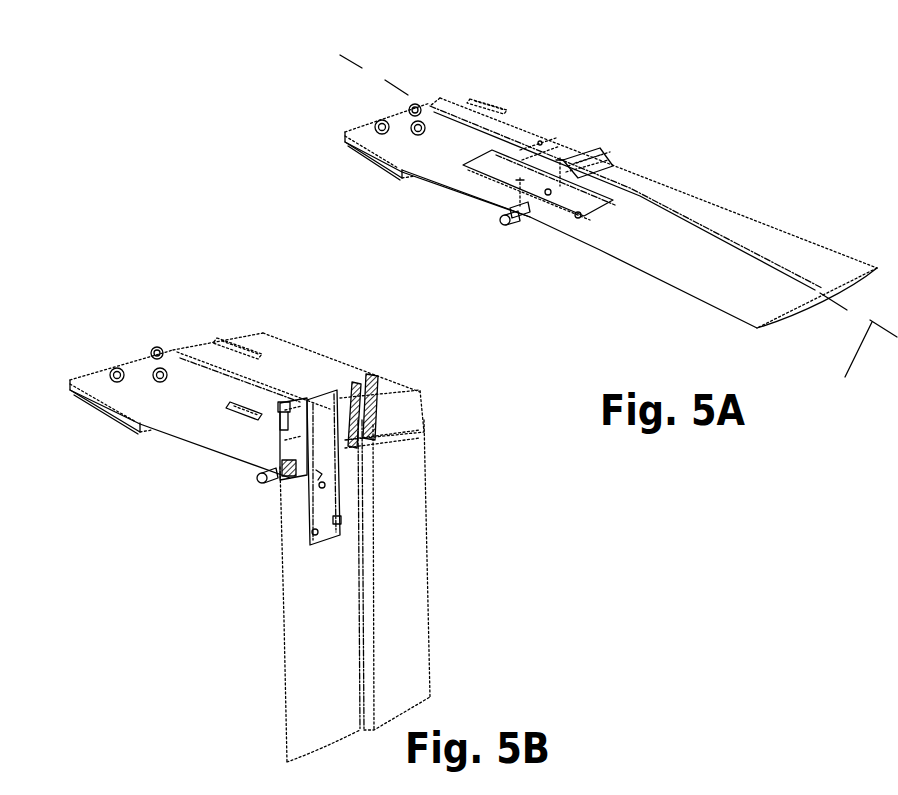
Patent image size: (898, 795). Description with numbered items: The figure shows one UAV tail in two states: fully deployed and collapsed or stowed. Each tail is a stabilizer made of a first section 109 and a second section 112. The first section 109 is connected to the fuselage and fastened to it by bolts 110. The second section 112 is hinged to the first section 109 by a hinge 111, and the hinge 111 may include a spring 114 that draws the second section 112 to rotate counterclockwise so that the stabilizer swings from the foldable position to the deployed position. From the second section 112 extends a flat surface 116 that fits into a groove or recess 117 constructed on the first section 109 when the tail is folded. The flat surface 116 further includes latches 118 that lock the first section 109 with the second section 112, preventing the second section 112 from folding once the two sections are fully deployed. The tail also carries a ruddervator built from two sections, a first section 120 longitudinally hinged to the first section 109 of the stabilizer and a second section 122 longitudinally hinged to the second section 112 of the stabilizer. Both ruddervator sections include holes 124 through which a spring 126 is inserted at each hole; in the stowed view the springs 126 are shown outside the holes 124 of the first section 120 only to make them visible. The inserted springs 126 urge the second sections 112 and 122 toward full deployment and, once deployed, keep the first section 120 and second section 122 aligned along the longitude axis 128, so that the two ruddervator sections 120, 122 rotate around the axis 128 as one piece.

In FIG. 5A, the first section 109 is at (448, 178).
In FIG. 5B, the first section 109 is at (175, 423).
In FIG. 5A, the bolts 110 is at (378, 127).
In FIG. 5B, the bolts 110 is at (157, 352).
In FIG. 5A, the hinge 111 is at (500, 218).
In FIG. 5B, the hinge 111 is at (260, 480).
In FIG. 5A, the second section 112 is at (647, 273).
In FIG. 5B, the second section 112 is at (310, 632).
In FIG. 5A, the spring 114 is at (522, 218).
In FIG. 5B, the spring 114 is at (286, 470).
In FIG. 5A, the flat surface 116 is at (567, 202).
In FIG. 5B, the flat surface 116 is at (323, 448).
In FIG. 5B, the groove or recess 117 is at (250, 428).
In FIG. 5B, the latches 118 is at (283, 407).
In FIG. 5A, the first section 120 is at (557, 123).
In FIG. 5B, the first section 120 is at (278, 360).
In FIG. 5A, the second section 122 is at (728, 215).
In FIG. 5B, the second section 122 is at (397, 610).
In FIG. 5B, the holes 124 is at (345, 430).
In FIG. 5B, the spring 126 is at (372, 387).
In FIG. 5A, the longitude axis 128 is at (355, 63).